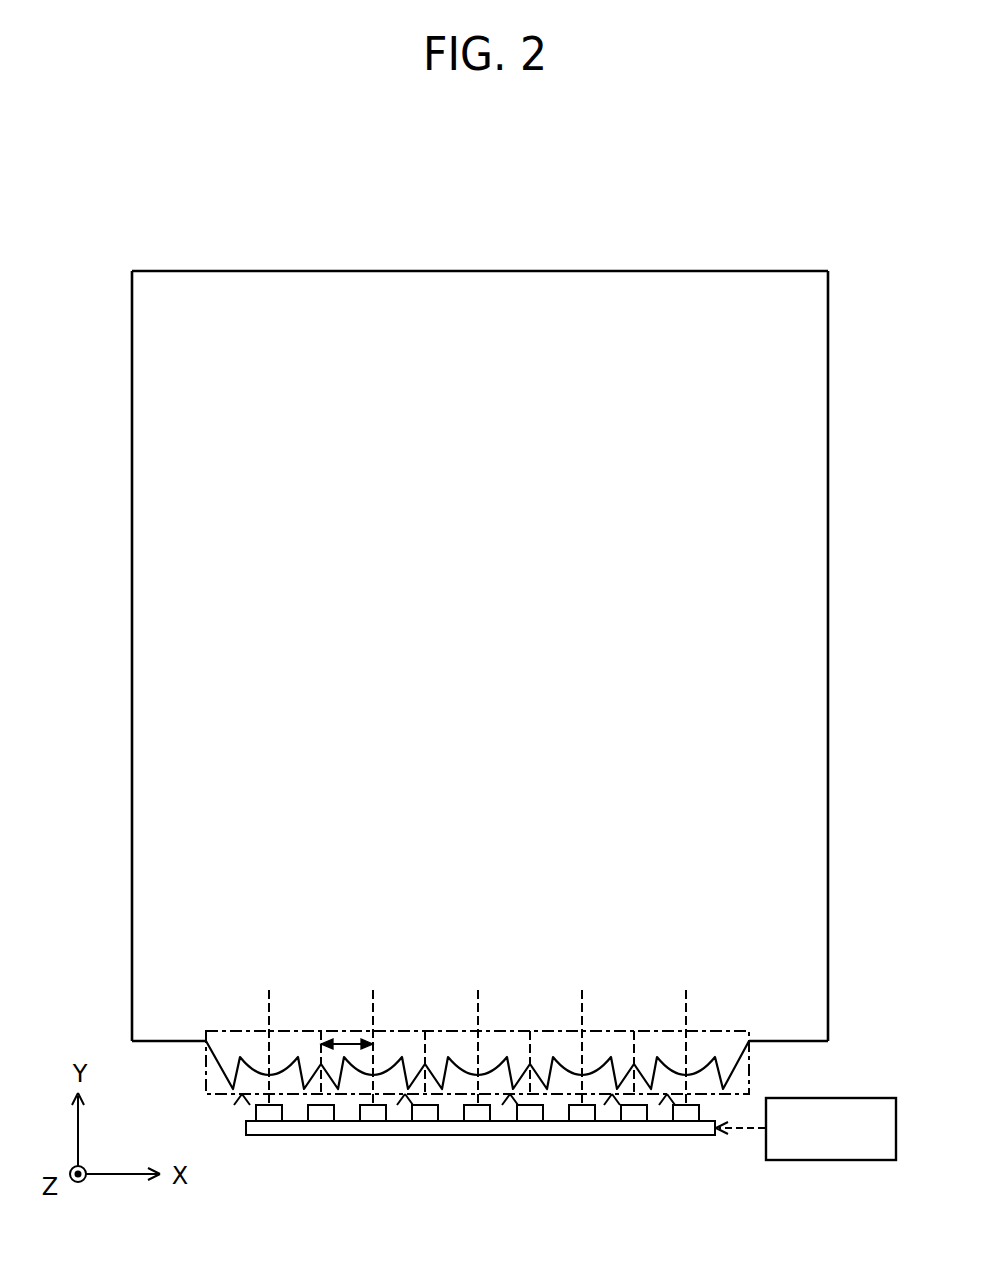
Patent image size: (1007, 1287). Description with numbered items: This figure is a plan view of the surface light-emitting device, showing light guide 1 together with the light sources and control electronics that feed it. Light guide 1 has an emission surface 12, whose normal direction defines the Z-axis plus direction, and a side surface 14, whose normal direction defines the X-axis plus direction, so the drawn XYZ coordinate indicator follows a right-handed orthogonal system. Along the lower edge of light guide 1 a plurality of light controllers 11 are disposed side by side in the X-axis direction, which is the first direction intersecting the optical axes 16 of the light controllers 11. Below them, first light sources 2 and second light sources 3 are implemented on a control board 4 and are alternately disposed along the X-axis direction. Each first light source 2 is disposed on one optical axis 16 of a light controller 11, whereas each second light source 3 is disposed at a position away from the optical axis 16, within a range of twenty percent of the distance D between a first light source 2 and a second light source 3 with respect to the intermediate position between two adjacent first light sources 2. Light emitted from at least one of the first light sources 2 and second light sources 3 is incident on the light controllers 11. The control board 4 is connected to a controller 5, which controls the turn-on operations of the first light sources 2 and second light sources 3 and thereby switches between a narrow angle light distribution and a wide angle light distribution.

The light guide 1 is at (632, 265).
The first light source 2 is at (278, 1122).
The second light source 3 is at (324, 1122).
The control board 4 is at (698, 1136).
The controller 5 is at (838, 1161).
The light controller 11 is at (646, 1195).
The emission surface 12 is at (440, 302).
The side surface 14 is at (132, 455).
The optical axis 16 is at (272, 1014).
The distance D is at (347, 1042).